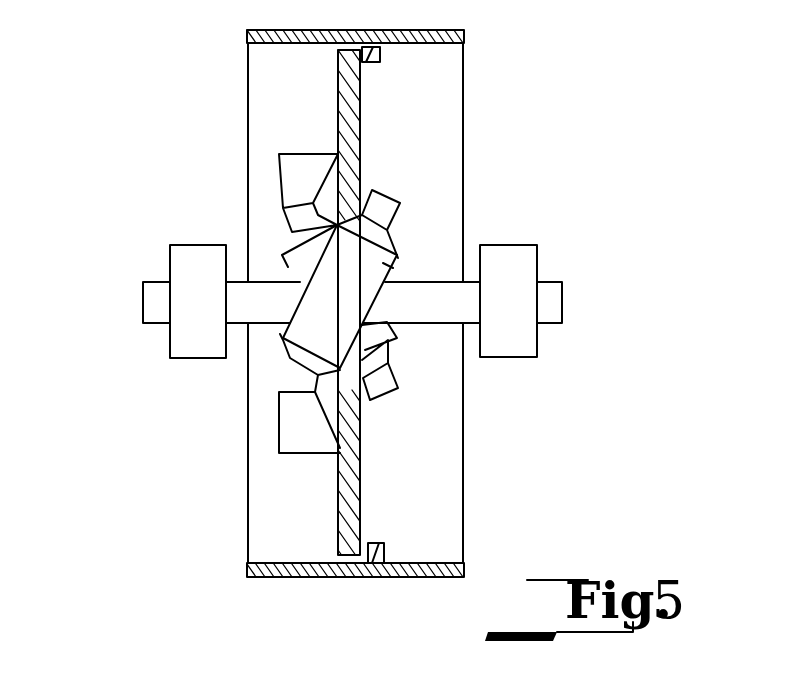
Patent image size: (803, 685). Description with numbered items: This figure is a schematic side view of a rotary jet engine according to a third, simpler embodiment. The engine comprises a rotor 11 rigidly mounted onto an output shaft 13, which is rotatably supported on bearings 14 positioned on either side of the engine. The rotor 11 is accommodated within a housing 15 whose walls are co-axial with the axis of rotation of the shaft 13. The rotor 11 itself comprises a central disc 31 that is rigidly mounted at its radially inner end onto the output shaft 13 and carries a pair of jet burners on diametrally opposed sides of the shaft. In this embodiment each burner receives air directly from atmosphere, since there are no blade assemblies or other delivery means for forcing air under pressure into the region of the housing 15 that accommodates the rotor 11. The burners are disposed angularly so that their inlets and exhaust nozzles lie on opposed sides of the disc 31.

The rotor 11 is at (361, 92).
The output shaft 13 is at (160, 290).
The bearings 14 is at (192, 348).
The housing 15 is at (455, 30).
The disc 31 is at (337, 120).